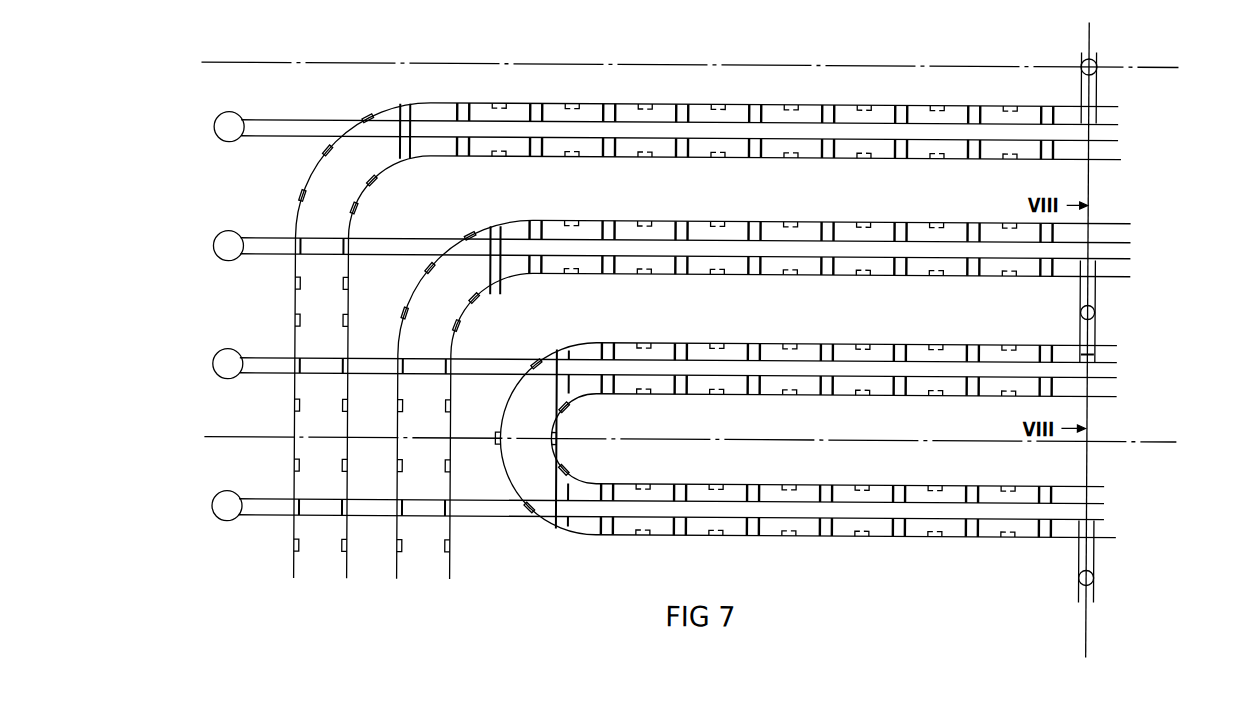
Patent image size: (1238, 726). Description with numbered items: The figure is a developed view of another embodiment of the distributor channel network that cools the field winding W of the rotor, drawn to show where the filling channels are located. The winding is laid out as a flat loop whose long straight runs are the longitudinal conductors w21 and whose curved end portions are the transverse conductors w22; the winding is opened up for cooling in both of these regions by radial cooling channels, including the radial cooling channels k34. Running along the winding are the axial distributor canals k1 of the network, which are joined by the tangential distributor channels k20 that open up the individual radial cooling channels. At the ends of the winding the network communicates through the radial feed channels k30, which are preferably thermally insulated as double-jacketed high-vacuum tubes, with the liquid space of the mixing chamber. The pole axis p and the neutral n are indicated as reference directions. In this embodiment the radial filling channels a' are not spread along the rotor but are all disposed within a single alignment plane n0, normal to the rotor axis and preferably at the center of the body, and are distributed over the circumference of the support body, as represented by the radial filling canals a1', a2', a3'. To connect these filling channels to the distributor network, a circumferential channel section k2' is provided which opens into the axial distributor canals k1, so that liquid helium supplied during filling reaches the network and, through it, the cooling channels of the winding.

The neutral n is at (700, 65).
The pole axis p is at (697, 438).
The alignment plane n0 is at (1088, 636).
The radial filling channels a' is at (1134, 327).
The radial filling canal a1' is at (1111, 79).
The radial filling canal a2' is at (1109, 322).
The radial filling canal a3' is at (1109, 574).
The circumferential channel section k2' is at (1127, 362).
The radial feed channels k30 is at (226, 232).
The transverse conductors w22 is at (323, 299).
The longitudinal conductors w21 is at (587, 232).
The axial distributor canals k1 is at (499, 511).
The field winding W is at (428, 565).
The tangential distributor channels k20 is at (900, 232).
The radial cooling channels k34 is at (796, 230).